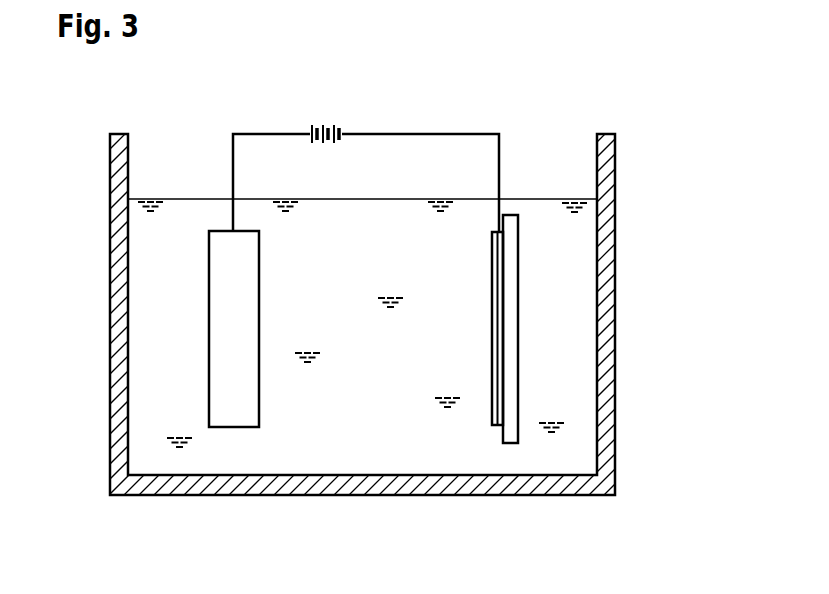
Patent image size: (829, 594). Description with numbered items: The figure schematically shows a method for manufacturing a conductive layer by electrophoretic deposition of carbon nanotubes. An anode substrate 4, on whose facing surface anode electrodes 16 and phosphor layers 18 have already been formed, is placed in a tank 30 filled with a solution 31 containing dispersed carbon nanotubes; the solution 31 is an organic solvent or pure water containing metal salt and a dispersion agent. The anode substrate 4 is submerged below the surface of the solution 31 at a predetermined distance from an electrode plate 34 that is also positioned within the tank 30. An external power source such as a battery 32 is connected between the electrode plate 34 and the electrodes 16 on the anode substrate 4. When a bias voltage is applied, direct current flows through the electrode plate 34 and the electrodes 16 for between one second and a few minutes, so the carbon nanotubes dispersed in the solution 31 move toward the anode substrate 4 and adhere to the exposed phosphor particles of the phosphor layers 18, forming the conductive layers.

The anode substrate 4 is at (520, 438).
The anode electrodes 16 is at (502, 428).
The phosphor layers 18 is at (493, 423).
The tank 30 is at (615, 257).
The solution 31 is at (543, 243).
The battery 32 is at (342, 118).
The electrode plate 34 is at (222, 355).